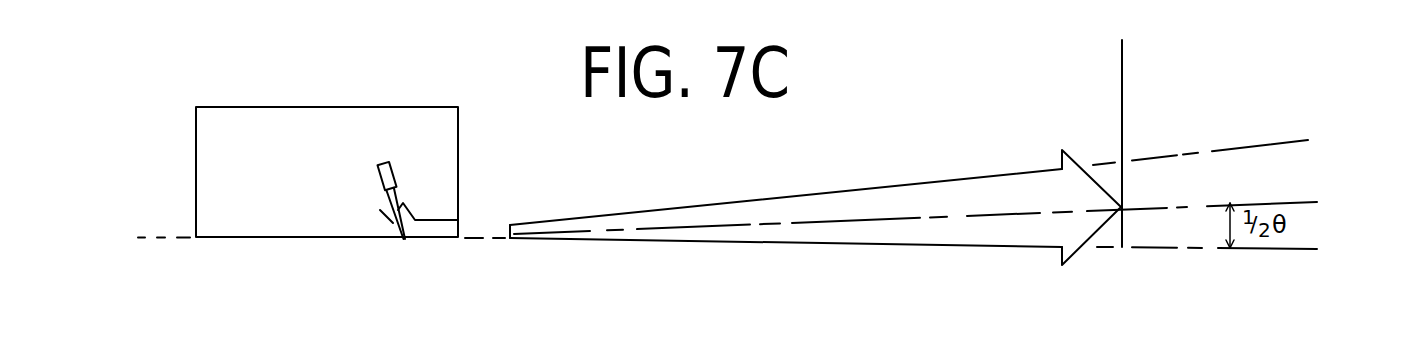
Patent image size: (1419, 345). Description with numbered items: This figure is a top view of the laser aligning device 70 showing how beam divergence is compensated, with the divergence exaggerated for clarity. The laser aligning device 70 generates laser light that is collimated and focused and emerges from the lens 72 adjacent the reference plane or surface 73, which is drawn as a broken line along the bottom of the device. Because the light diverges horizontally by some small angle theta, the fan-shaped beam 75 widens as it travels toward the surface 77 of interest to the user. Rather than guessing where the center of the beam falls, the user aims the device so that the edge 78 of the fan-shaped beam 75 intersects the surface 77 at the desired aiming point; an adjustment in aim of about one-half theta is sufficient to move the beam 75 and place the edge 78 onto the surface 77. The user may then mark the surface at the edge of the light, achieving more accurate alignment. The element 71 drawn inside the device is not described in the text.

The laser aligning device 70 is at (440, 108).
The transducer 71 is at (383, 158).
The lens 72 is at (378, 221).
The reference plane or surface 73 is at (167, 238).
The fan-shaped beam 75 is at (683, 207).
The surface 77 is at (1122, 92).
The edge 78 is at (905, 245).